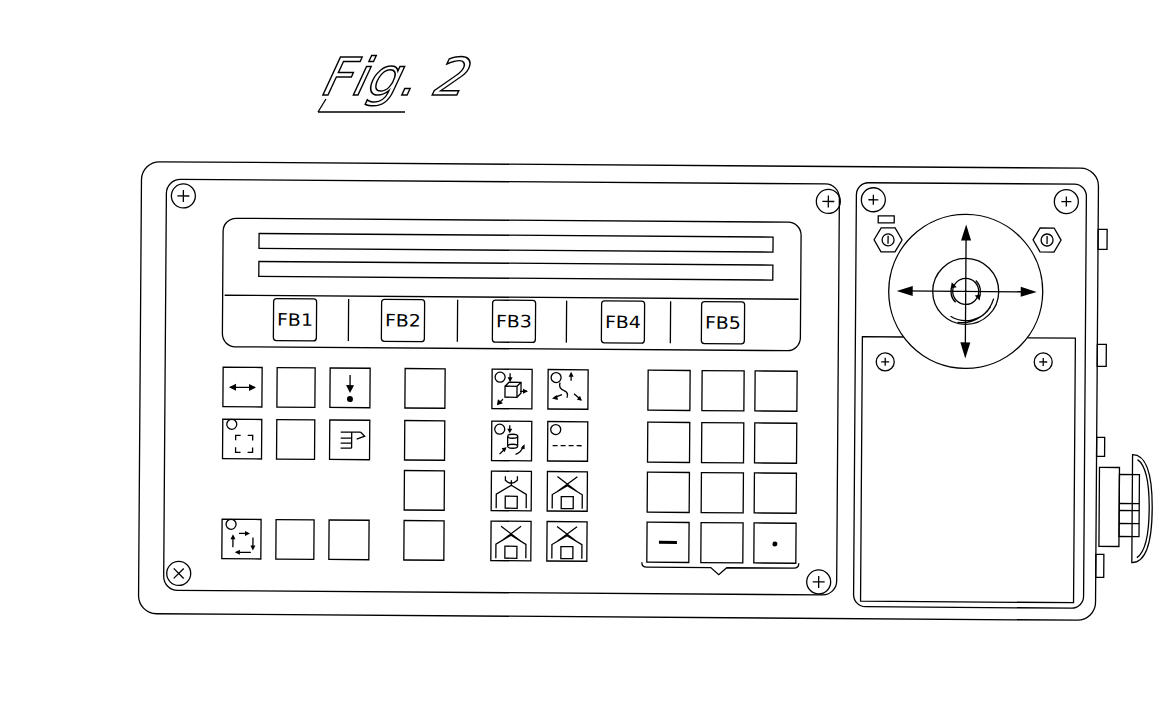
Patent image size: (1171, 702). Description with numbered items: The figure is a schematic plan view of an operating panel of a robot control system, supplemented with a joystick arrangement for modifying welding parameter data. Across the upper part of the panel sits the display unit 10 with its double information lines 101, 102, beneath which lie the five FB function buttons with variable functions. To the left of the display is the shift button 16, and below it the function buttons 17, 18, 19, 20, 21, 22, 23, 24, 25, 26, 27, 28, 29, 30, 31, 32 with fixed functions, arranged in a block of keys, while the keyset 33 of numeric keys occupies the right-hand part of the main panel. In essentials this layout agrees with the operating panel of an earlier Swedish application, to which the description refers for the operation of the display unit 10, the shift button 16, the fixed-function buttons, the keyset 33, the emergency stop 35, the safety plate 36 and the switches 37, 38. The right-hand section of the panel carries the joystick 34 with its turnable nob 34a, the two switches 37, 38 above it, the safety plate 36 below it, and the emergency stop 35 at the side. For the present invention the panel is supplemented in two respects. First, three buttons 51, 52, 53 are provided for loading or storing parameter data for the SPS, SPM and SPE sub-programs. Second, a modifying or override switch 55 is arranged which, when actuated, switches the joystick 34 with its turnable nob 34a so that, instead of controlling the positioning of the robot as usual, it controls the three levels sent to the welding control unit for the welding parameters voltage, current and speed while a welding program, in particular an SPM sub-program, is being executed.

The display unit 10 is at (511, 271).
The information line 101 is at (678, 250).
The information line 102 is at (489, 272).
The shift button 16 is at (223, 395).
The function button 17 is at (303, 373).
The function button 18 is at (370, 390).
The function button 19 is at (224, 436).
The function button 20 is at (303, 452).
The function button 21 is at (360, 452).
The function button 22 is at (243, 562).
The function button 23 is at (292, 559).
The function button 24 is at (351, 559).
The function button 25 is at (492, 391).
The function button 26 is at (492, 446).
The function button 27 is at (588, 393).
The function button 28 is at (588, 447).
The function button 29 is at (492, 489).
The function button 30 is at (588, 493).
The function button 31 is at (492, 541).
The function button 32 is at (587, 561).
The keyset 33 is at (720, 574).
The joystick 34 is at (965, 293).
The turnable nob 34a is at (975, 262).
The emergency stop 35 is at (1130, 543).
The safety plate 36 is at (884, 591).
The switch 37 is at (892, 214).
The switch 38 is at (1057, 245).
The button 51 is at (444, 371).
The button 52 is at (446, 427).
The button 53 is at (405, 491).
The override switch 55 is at (423, 561).